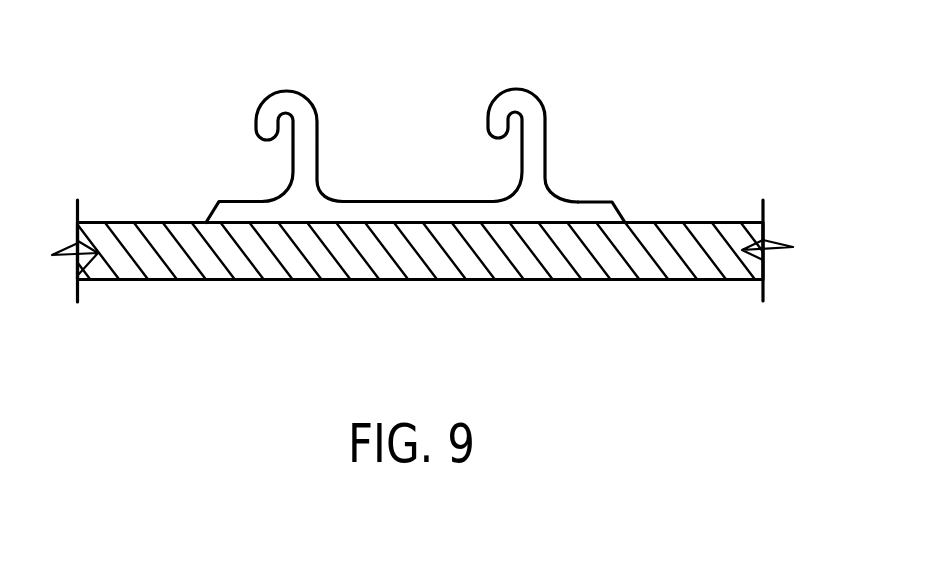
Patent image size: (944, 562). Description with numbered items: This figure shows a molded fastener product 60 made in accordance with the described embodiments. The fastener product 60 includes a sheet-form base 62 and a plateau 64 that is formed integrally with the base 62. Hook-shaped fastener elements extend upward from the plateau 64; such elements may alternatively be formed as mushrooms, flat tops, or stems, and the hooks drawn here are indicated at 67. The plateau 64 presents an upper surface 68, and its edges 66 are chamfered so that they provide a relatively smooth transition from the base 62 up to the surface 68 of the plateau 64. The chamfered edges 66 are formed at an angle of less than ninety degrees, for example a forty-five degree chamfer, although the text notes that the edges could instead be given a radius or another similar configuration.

The fastener product 60 is at (713, 90).
The base 62 is at (692, 266).
The plateau 64 is at (578, 207).
The chamfered edge 66 is at (208, 212).
The left hook 67 is at (285, 91).
The surface 68 is at (385, 201).